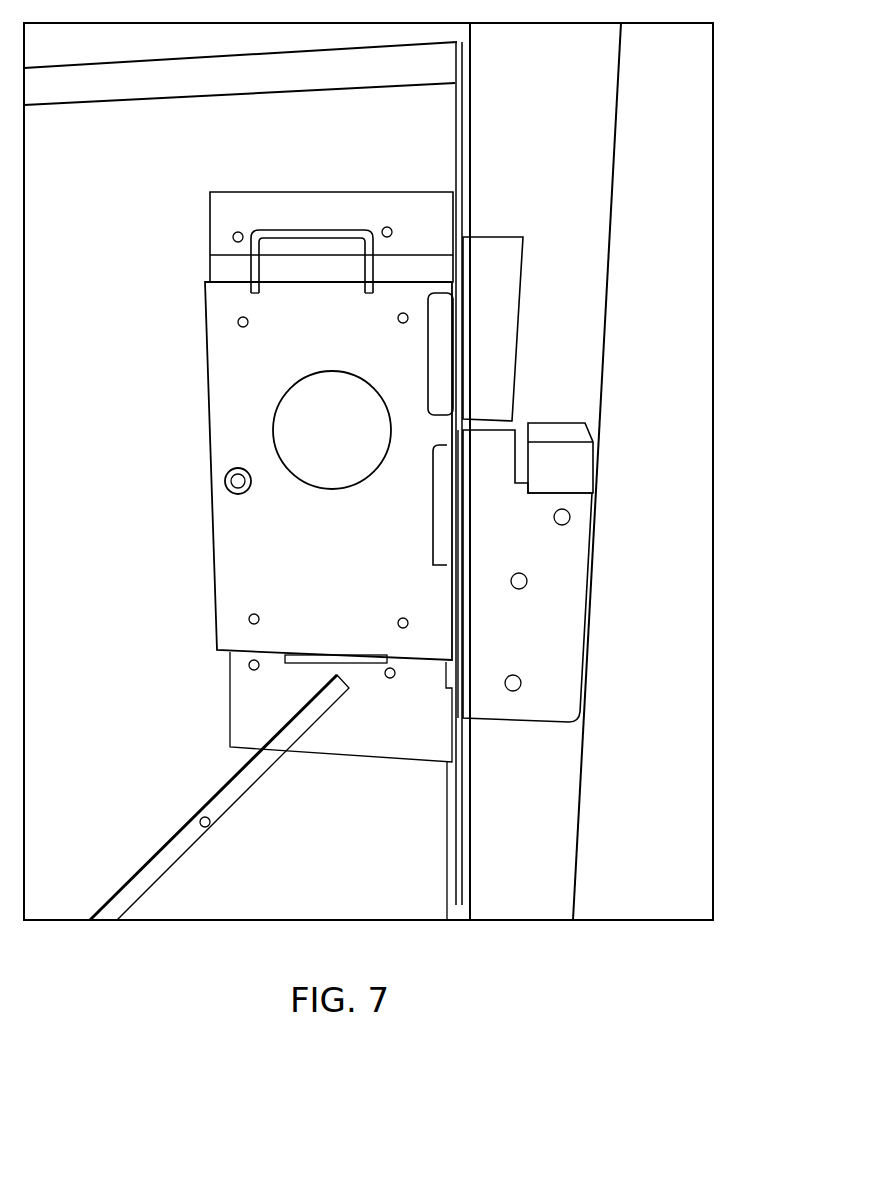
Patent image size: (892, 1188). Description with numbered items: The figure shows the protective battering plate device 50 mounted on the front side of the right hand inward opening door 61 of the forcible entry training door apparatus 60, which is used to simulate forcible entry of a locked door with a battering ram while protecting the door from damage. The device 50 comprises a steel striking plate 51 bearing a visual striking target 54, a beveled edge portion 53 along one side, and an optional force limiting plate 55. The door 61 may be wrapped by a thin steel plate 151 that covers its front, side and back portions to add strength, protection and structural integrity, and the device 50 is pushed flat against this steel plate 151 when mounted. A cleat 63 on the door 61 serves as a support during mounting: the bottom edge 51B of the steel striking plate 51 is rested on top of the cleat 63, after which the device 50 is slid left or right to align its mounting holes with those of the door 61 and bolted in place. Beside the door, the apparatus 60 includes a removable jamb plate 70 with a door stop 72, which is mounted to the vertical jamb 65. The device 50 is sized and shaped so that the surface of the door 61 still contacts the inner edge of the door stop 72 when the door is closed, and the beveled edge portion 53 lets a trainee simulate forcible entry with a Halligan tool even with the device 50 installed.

The protective battering plate device 50 is at (346, 564).
The steel striking plate 51 is at (250, 378).
The bottom edge 51B is at (240, 655).
The beveled edge portion 53 is at (430, 513).
The visual striking target 54 is at (273, 430).
The force limiting plate 55 is at (440, 358).
The forcible entry training door apparatus 60 is at (644, 106).
The right hand inward opening door 61 is at (420, 139).
The cleat 63 is at (360, 662).
The vertical jamb 65 is at (602, 198).
The removable jamb plate 70 is at (547, 542).
The door stop 72 is at (447, 612).
The thin steel plate 151 is at (428, 229).